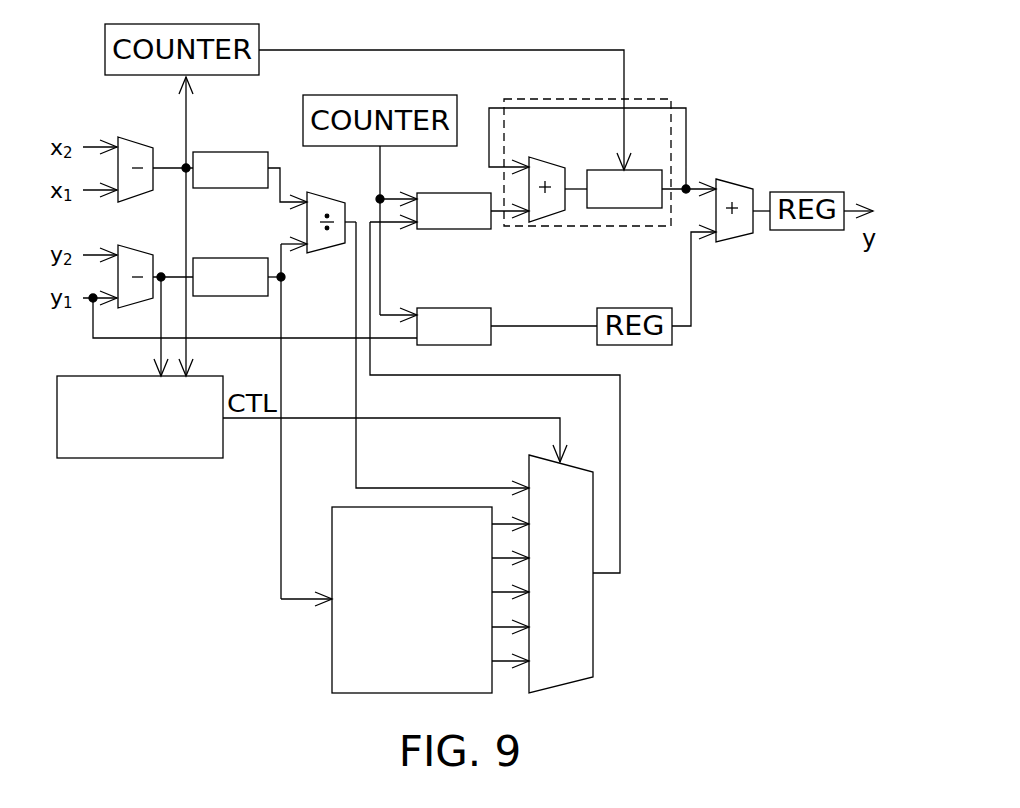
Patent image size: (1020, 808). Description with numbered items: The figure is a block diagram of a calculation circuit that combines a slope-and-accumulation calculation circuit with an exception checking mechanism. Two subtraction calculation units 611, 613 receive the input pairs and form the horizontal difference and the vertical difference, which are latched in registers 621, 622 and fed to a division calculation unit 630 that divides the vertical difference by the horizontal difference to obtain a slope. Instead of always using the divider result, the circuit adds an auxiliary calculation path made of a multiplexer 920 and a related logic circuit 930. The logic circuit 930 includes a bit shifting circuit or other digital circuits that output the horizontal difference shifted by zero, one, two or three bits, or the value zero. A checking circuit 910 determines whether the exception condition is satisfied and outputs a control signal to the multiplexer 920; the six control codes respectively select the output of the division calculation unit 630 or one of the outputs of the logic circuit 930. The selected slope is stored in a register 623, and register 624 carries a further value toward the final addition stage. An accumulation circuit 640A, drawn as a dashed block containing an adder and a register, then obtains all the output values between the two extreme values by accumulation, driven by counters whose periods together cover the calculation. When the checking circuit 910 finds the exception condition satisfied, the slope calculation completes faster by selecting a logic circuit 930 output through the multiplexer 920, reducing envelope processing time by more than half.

The subtraction calculation unit 611 is at (120, 138).
The subtraction calculation unit 613 is at (119, 246).
The register 621 is at (202, 150).
The register 622 is at (202, 258).
The register 623 is at (425, 230).
The register 624 is at (427, 308).
The division calculation unit 630 is at (330, 253).
The accumulation circuit 640A is at (670, 99).
The checking circuit 910 is at (128, 460).
The multiplexer 920 is at (593, 600).
The logic circuit 930 is at (330, 658).